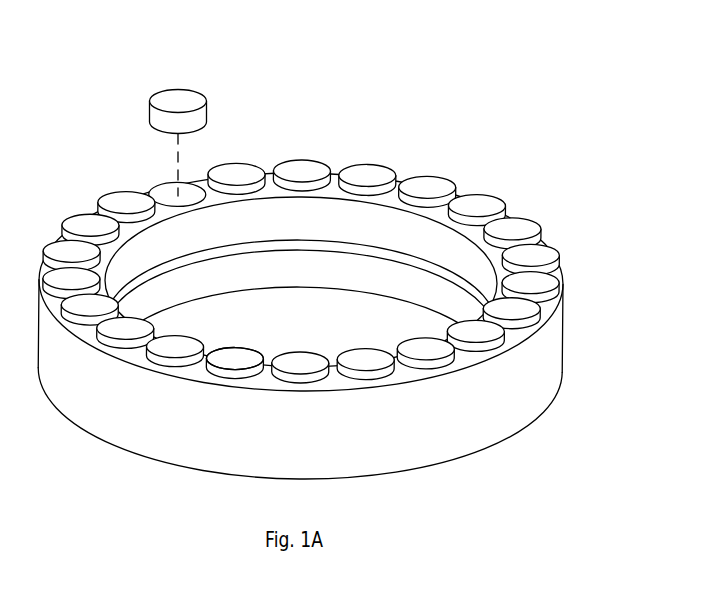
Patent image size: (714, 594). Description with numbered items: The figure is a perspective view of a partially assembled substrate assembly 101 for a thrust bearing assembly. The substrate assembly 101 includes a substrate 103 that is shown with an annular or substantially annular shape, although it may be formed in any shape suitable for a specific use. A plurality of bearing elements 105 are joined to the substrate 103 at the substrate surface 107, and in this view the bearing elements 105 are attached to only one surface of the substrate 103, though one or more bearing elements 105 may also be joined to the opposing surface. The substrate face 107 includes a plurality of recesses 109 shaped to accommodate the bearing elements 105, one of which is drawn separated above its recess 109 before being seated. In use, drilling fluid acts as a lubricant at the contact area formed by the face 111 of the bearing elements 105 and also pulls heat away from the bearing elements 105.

The substrate assembly 101 is at (334, 245).
The substrate 103 is at (565, 342).
The bearing elements 105 is at (180, 88).
The substrate surface 107 is at (203, 178).
The recesses 109 is at (168, 188).
The face of the bearing elements 111 is at (235, 358).